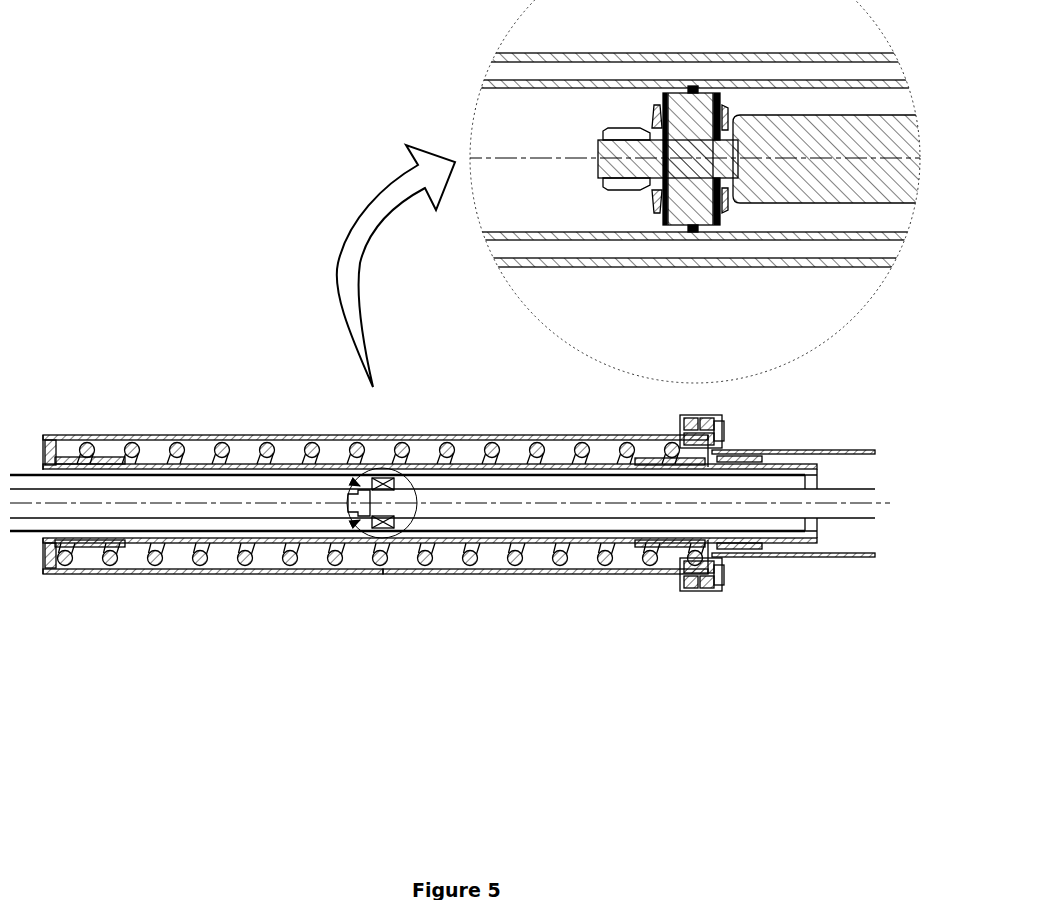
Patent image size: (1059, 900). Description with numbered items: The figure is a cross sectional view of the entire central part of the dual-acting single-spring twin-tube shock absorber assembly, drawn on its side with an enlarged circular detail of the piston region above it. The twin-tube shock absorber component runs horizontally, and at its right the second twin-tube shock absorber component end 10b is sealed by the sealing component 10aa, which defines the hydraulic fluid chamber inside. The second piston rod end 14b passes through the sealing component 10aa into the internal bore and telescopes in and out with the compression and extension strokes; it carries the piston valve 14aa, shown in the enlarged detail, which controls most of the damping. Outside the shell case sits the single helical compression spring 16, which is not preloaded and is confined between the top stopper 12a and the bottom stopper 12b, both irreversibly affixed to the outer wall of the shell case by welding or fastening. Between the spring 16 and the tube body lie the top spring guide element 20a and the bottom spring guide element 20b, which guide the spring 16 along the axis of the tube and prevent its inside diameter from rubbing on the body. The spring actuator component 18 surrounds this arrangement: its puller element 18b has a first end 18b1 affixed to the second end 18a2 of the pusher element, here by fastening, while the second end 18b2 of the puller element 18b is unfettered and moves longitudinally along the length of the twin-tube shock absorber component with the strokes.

The second twin-tube shock absorber component end 10b is at (777, 458).
The sealing component 10aa is at (812, 536).
The top stopper 12a is at (746, 448).
The bottom stopper 12b is at (43, 563).
The piston valve 14aa is at (378, 535).
The second piston rod end 14b is at (469, 516).
The helical compression spring 16 is at (532, 435).
The spring actuator component 18 is at (441, 526).
The second end of the pusher element 18a2 is at (729, 563).
The puller element 18b is at (292, 434).
The first end of the puller element 18b1 is at (666, 576).
The second end of the puller element 18b2 is at (91, 578).
The top spring guide element 20a is at (661, 457).
The bottom spring guide element 20b is at (112, 452).